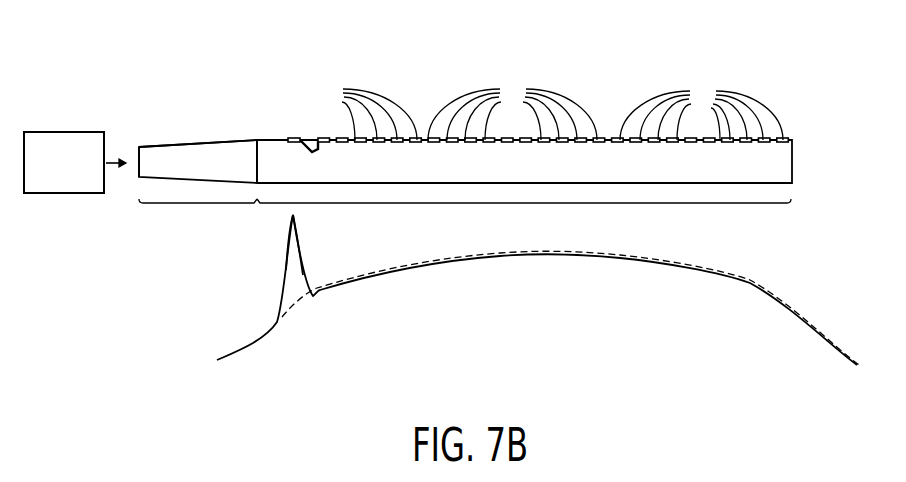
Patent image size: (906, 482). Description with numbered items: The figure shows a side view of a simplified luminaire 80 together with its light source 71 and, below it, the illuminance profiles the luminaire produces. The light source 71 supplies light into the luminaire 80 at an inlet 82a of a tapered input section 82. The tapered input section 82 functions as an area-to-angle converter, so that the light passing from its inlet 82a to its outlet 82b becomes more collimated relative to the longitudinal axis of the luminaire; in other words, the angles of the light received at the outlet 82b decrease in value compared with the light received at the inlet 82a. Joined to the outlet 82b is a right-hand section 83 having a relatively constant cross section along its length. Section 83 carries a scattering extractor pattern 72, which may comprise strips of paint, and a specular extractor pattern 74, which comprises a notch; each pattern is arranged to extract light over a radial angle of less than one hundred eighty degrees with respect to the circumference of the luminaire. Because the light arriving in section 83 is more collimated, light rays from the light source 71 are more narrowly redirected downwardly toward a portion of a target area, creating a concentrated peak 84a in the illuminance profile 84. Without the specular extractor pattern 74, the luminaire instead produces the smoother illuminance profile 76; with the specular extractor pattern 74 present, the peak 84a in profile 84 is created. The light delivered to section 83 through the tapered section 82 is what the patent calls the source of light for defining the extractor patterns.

The light source 71 is at (62, 131).
The luminaire 80 is at (196, 91).
The tapered input section 82 is at (198, 189).
The inlet 82a is at (135, 148).
The outlet 82b is at (258, 142).
The section having a constant cross section 83 is at (524, 189).
The scattering extractor pattern 72 is at (285, 138).
The specular extractor pattern 74 is at (312, 138).
The illuminance profile 84 is at (367, 280).
The peak 84a is at (296, 216).
The illuminance profile 76 is at (301, 303).